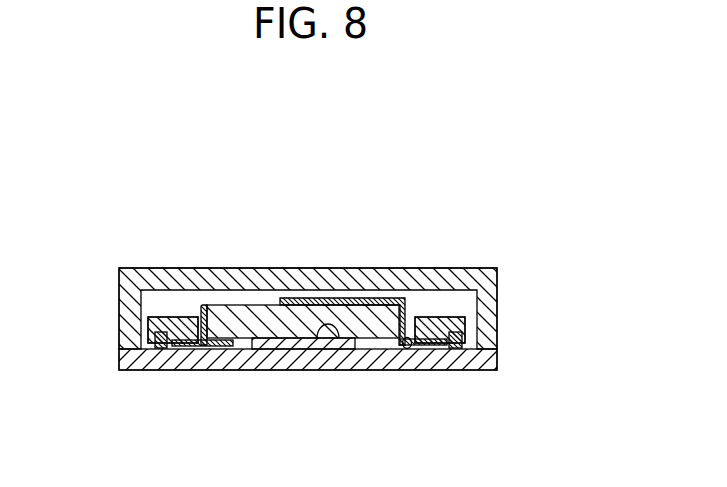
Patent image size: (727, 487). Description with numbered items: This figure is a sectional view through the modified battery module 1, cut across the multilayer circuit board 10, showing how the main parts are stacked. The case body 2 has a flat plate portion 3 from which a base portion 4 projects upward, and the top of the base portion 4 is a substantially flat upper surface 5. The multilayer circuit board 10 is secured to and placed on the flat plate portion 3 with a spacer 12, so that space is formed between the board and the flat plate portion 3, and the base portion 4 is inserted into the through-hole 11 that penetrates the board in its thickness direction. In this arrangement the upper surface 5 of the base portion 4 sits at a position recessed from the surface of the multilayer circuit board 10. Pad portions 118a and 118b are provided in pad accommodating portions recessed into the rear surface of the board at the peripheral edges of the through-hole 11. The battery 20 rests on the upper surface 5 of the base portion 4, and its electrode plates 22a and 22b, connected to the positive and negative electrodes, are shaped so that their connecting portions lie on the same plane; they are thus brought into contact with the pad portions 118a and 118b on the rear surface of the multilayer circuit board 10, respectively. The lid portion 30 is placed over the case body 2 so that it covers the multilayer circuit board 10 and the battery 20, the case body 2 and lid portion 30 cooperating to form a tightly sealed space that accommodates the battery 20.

The battery module 1 is at (153, 193).
The case body 2 is at (485, 362).
The flat plate portion 3 is at (203, 346).
The base portion 4 is at (292, 343).
The upper surface 5 is at (342, 340).
The multilayer circuit board 10 is at (158, 322).
The through-hole 11 is at (407, 349).
The spacer 12 is at (160, 340).
The battery 20 is at (278, 318).
The electrode plate 22a is at (357, 300).
The electrode plate 22b is at (203, 312).
The lid portion 30 is at (237, 282).
The pad portion 118a is at (427, 320).
The pad portion 118b is at (175, 320).